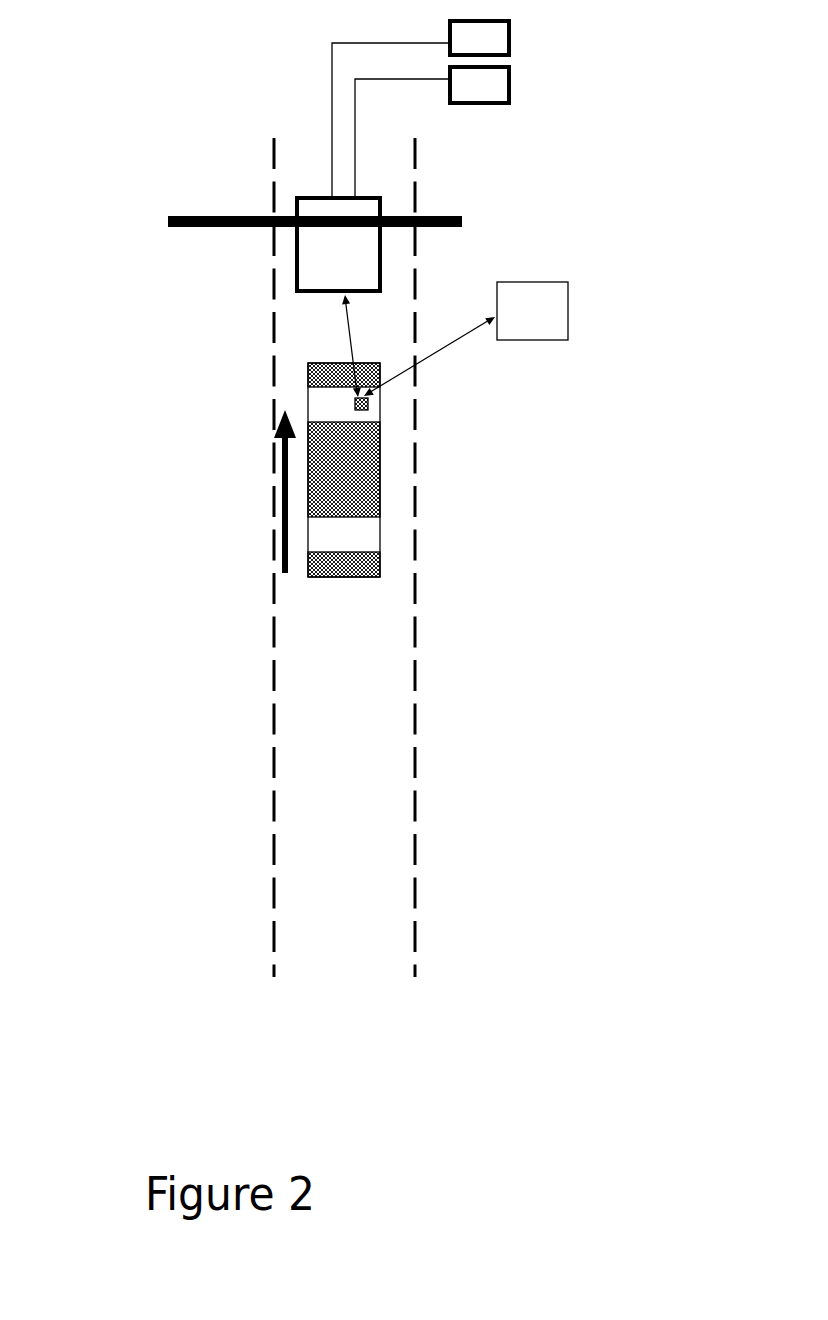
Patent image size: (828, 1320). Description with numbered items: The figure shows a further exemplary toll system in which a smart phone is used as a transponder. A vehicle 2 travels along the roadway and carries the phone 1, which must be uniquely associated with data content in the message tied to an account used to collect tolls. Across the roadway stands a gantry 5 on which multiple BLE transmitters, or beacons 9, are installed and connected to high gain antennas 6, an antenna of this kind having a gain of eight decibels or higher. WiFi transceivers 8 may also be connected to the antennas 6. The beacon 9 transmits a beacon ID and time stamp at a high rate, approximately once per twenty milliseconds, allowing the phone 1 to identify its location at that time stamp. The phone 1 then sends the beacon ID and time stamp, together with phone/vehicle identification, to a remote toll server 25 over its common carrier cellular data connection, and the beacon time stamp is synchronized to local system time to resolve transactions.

The phone 1 is at (409, 359).
The vehicle 2 is at (344, 504).
The gantry 5 is at (364, 557).
The high gain antennas 6 is at (333, 202).
The WiFi transceivers 8 is at (464, 108).
The beacons 9 is at (433, 131).
The remote toll server 25 is at (467, 347).